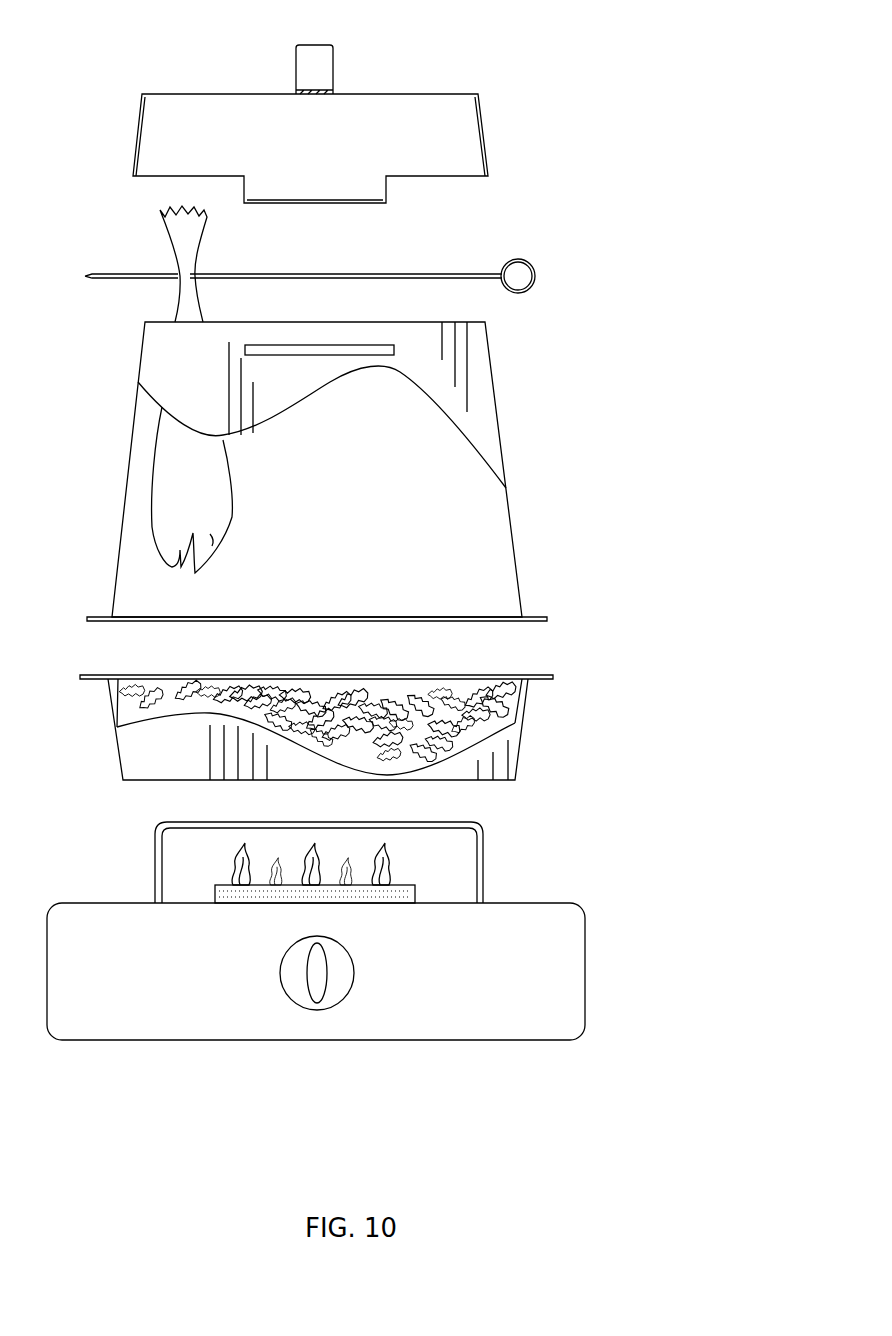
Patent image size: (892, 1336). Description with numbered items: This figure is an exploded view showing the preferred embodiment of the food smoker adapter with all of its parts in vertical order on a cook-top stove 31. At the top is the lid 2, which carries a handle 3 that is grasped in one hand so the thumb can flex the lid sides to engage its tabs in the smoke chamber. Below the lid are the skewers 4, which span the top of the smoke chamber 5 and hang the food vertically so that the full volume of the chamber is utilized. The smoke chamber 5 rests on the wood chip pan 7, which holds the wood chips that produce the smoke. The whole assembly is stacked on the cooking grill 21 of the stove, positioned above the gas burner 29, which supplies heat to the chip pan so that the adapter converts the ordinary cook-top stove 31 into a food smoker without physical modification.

The lid 2 is at (430, 92).
The handle 3 is at (293, 62).
The skewers 4 is at (533, 256).
The smoke chamber 5 is at (502, 443).
The wood chip pan 7 is at (498, 672).
The cooking grill 21 is at (488, 828).
The gas burner 29 is at (212, 882).
The cook-top stove 31 is at (598, 865).